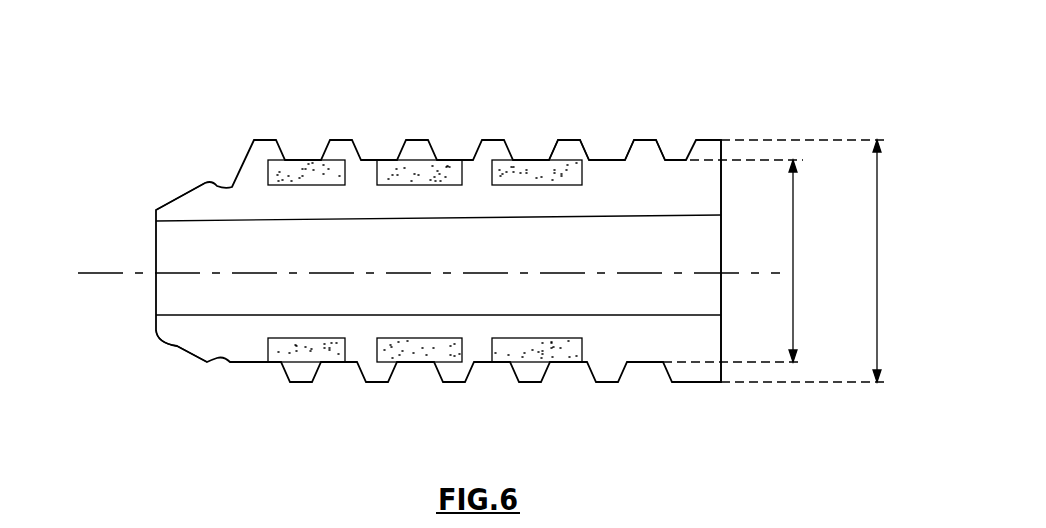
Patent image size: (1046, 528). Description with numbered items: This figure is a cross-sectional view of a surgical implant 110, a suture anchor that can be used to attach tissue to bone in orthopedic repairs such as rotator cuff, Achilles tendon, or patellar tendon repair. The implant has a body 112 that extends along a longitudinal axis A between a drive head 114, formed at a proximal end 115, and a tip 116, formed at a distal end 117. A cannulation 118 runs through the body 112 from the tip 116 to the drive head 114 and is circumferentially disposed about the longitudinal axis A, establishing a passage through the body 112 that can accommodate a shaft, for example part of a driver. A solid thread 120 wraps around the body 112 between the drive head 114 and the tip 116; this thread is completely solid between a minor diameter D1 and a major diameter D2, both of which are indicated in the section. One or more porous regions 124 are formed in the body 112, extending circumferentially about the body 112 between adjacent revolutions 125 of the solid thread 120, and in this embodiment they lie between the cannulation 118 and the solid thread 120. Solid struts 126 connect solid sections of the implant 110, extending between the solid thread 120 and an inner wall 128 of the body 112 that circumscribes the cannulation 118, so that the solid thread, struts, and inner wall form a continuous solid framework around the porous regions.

The surgical implant 110 is at (585, 126).
The body 112 is at (694, 185).
The drive head 114 is at (708, 190).
The proximal end 115 is at (696, 390).
The tip 116 is at (190, 205).
The distal end 117 is at (172, 354).
The cannulation 118 is at (472, 258).
The solid thread 120 is at (556, 143).
The porous region 124 is at (382, 170).
The revolution 125 is at (420, 140).
The solid strut 126 is at (618, 190).
The inner wall 128 is at (405, 323).
The longitudinal axis A is at (103, 274).
The minor diameter D1 is at (793, 218).
The major diameter D2 is at (877, 207).